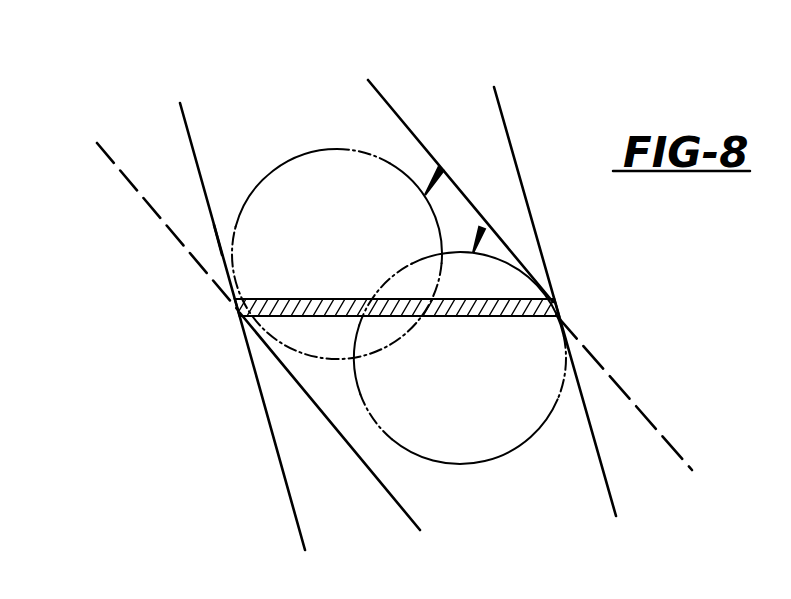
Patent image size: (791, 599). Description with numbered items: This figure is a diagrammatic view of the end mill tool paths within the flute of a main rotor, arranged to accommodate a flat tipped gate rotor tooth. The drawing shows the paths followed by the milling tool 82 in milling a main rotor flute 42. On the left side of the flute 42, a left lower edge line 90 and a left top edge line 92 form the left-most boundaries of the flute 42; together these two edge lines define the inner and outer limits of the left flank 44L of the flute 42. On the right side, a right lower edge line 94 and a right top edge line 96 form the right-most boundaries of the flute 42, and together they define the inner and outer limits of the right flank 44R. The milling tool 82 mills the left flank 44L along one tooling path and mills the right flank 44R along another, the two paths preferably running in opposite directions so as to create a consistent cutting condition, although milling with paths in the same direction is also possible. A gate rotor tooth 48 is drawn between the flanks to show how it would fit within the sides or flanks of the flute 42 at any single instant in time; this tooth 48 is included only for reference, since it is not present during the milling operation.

The main rotor flute 42 is at (340, 132).
The gate rotor tooth 48 is at (403, 317).
The left flank 44L is at (317, 503).
The right flank 44R is at (500, 152).
The milling tool 82 is at (482, 226).
The left lower edge line 90 is at (156, 206).
The left top edge line 92 is at (220, 242).
The right lower edge line 94 is at (500, 252).
The right top edge line 96 is at (547, 270).